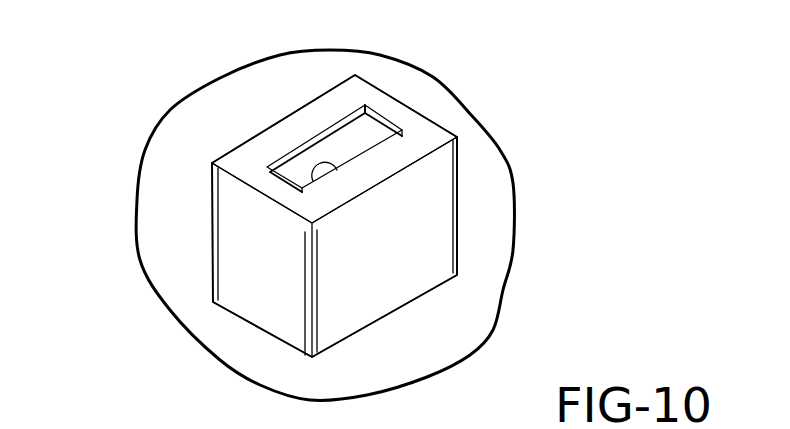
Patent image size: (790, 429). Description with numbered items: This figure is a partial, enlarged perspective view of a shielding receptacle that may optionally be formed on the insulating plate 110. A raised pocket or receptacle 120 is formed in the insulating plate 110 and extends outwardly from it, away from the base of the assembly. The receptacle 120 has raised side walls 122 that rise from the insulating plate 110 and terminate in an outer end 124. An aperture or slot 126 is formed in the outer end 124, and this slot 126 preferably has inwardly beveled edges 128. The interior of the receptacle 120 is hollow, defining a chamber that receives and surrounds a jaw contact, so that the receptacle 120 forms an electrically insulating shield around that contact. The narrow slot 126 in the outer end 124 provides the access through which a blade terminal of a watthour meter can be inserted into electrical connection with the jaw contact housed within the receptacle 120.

The insulating plate 110 is at (495, 217).
The receptacle 120 is at (463, 168).
The side walls 122 is at (248, 268).
The outer end 124 is at (243, 163).
The slot 126 is at (337, 168).
The inwardly beveled edges 128 is at (307, 148).